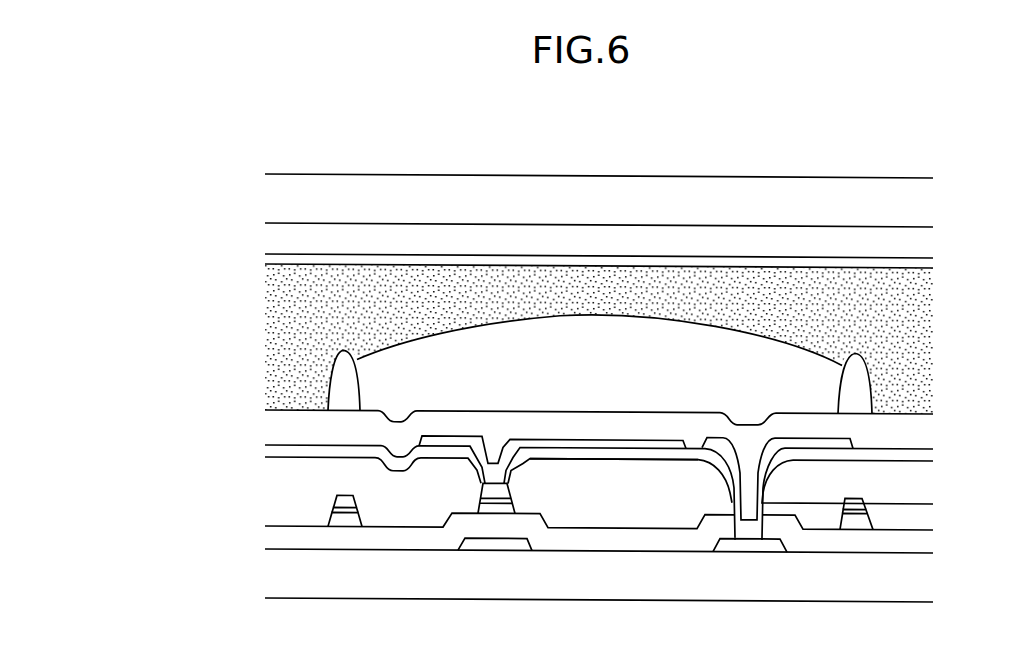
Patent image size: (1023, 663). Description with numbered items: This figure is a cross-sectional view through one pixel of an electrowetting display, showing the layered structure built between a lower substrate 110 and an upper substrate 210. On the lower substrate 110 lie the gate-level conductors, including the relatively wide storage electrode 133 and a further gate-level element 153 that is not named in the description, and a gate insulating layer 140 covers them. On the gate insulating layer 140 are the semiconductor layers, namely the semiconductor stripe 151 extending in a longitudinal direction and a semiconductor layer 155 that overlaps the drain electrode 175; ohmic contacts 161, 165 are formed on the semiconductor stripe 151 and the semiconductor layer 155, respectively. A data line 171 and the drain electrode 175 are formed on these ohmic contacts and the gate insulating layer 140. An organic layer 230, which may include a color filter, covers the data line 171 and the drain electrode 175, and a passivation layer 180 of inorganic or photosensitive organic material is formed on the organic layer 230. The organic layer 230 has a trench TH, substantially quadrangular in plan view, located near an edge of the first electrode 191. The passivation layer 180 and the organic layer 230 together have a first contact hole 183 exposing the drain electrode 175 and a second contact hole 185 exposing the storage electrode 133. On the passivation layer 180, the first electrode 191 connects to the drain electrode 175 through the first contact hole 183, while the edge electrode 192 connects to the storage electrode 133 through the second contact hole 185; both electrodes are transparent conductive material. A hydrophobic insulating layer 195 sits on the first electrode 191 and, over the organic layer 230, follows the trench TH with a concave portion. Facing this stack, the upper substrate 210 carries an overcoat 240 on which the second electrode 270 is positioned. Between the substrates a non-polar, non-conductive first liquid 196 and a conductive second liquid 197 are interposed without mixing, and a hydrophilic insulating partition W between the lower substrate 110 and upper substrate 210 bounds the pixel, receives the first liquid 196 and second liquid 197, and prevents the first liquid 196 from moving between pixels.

The lower substrate 110 is at (910, 576).
The storage electrode 133 is at (495, 546).
The gate insulating layer 140 is at (910, 541).
The semiconductor stripe 151 is at (353, 520).
The storage/gate line electrode 153 is at (748, 542).
The semiconductor layer 155 is at (488, 506).
The ohmic contact 161 is at (348, 513).
The ohmic contact 165 is at (510, 497).
The data line 171 is at (343, 500).
The drain electrode 175 is at (486, 489).
The passivation layer 180 is at (910, 455).
The first contact hole 183 is at (497, 434).
The second contact hole 185 is at (749, 467).
The first electrode 191 is at (585, 443).
The edge electrode 192 is at (713, 444).
The hydrophobic insulating layer 195 is at (910, 427).
The first liquid 196 is at (467, 357).
The second liquid 197 is at (608, 285).
The upper substrate 210 is at (910, 193).
The organic layer 230 is at (910, 490).
The overcoat 240 is at (910, 238).
The second electrode 270 is at (910, 261).
The trench TH is at (399, 448).
The partition W is at (857, 377).